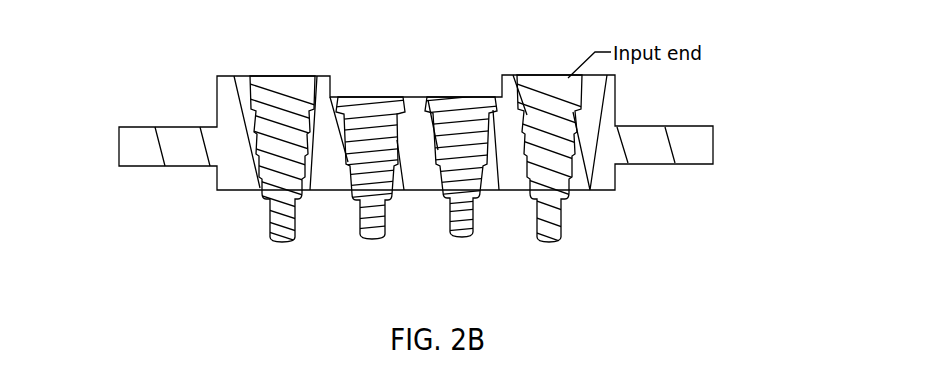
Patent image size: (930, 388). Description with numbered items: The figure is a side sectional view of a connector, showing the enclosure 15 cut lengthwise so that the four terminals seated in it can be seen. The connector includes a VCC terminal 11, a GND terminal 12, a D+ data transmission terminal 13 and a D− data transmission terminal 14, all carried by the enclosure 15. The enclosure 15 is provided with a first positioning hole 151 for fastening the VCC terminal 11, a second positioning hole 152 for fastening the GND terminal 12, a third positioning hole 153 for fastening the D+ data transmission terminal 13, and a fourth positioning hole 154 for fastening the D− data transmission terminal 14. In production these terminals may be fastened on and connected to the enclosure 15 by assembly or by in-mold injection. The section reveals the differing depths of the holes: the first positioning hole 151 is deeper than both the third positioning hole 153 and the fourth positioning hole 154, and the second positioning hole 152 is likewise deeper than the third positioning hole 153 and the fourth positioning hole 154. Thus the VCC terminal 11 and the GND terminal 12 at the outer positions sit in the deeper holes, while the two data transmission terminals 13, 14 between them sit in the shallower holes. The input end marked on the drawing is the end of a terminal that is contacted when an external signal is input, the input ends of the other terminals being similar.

The enclosure 15 is at (642, 148).
The first positioning hole 151 is at (275, 77).
The second positioning hole 152 is at (552, 75).
The third positioning hole 153 is at (373, 98).
The fourth positioning hole 154 is at (460, 98).
The VCC terminal 11 is at (275, 228).
The GND terminal 12 is at (542, 232).
The D+ data transmission terminal 13 is at (367, 230).
The D− data transmission terminal 14 is at (458, 230).